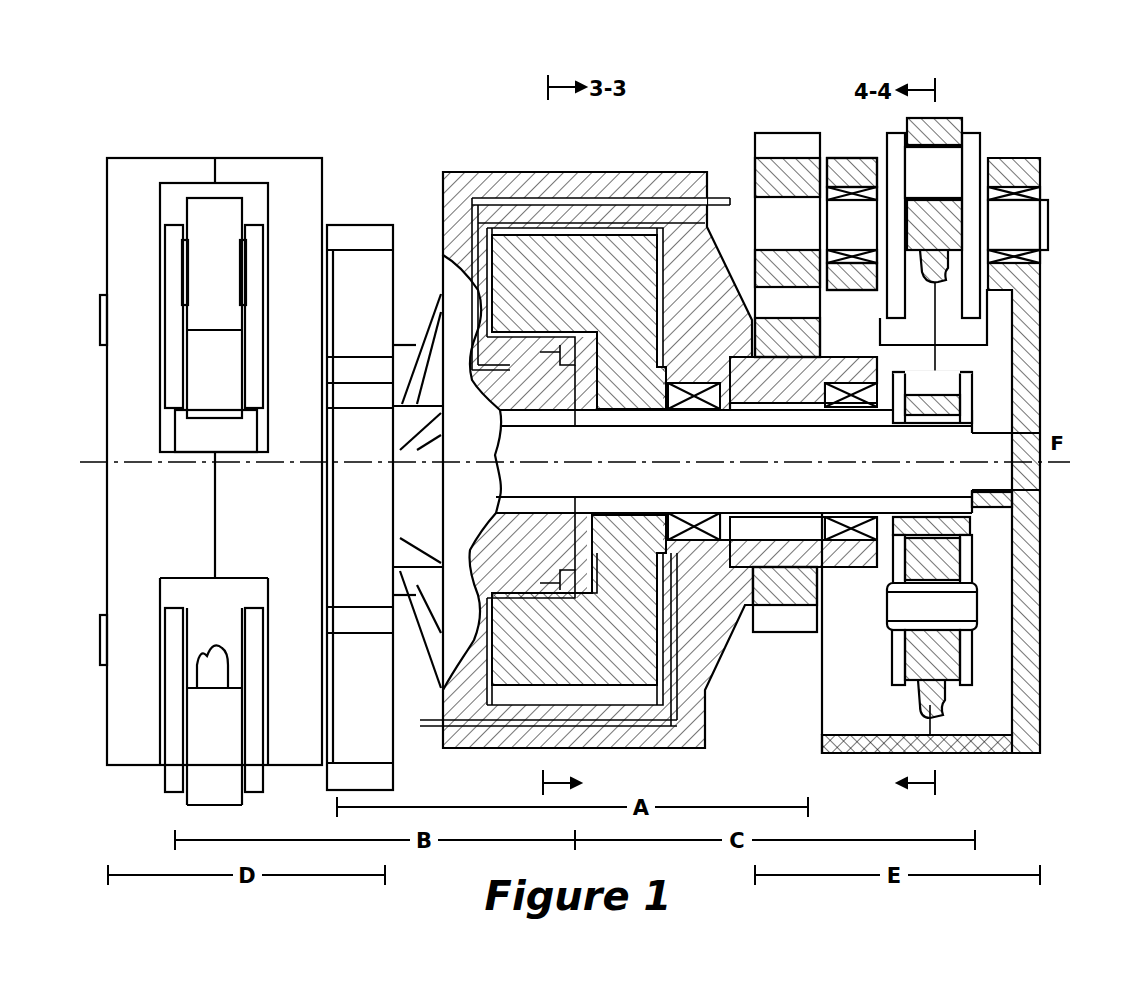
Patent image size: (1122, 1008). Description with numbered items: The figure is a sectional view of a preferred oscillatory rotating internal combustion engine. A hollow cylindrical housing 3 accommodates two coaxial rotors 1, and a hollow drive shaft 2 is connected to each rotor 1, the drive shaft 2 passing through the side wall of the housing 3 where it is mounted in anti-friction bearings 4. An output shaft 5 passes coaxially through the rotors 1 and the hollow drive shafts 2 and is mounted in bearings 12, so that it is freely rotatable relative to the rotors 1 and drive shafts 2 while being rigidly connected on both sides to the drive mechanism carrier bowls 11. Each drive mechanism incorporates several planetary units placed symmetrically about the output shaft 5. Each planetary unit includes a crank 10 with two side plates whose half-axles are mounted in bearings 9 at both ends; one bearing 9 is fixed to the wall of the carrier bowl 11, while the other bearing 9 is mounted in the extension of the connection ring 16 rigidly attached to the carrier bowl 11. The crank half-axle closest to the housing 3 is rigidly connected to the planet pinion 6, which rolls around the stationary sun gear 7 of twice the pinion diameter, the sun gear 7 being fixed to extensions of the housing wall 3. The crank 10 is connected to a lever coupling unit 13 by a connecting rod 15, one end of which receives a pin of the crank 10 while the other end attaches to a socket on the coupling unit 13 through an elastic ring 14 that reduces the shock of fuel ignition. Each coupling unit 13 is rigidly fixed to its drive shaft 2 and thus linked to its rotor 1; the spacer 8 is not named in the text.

The rotor 1 is at (520, 248).
The hollow drive shaft 2 is at (640, 418).
The housing 3 is at (590, 208).
The anti-friction bearings 4 is at (692, 402).
The output shaft 5 is at (772, 455).
The planet pinion 6 is at (772, 168).
The stationary sun gear 7 is at (790, 320).
The spacer 8 is at (848, 292).
The bearings 9 is at (1038, 257).
The crank 10 is at (972, 305).
The carrier bowl 11 is at (1030, 335).
The bearings 12 is at (940, 425).
The lever coupling unit 13 is at (960, 524).
The elastic ring 14 is at (957, 568).
The connecting rod 15 is at (935, 262).
The connection ring 16 is at (832, 752).